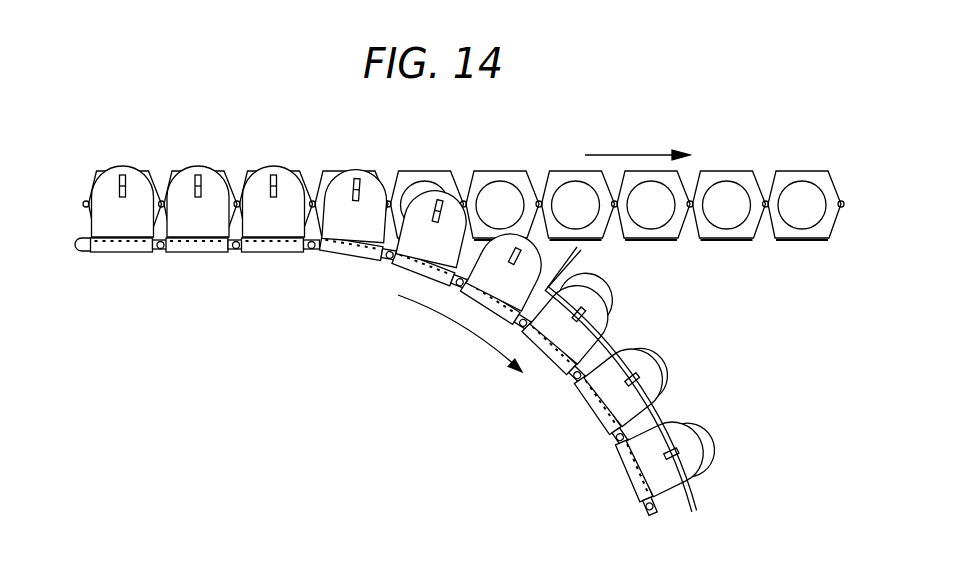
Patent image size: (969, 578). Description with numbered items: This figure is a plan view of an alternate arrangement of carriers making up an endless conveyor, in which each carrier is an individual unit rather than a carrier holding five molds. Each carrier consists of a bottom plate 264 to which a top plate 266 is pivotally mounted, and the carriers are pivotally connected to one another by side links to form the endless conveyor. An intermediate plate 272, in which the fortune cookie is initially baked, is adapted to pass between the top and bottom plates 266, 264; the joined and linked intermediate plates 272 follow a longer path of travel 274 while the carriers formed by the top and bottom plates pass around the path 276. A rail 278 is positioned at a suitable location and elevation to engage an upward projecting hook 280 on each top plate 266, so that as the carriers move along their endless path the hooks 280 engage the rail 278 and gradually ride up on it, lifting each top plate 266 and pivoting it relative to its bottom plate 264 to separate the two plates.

The bottom plate 264 is at (603, 299).
The top plate 266 is at (648, 358).
The intermediate plate 272 is at (488, 176).
The path of travel 274 is at (637, 138).
The path 276 is at (422, 305).
The rail 278 is at (663, 411).
The hook 280 is at (357, 180).